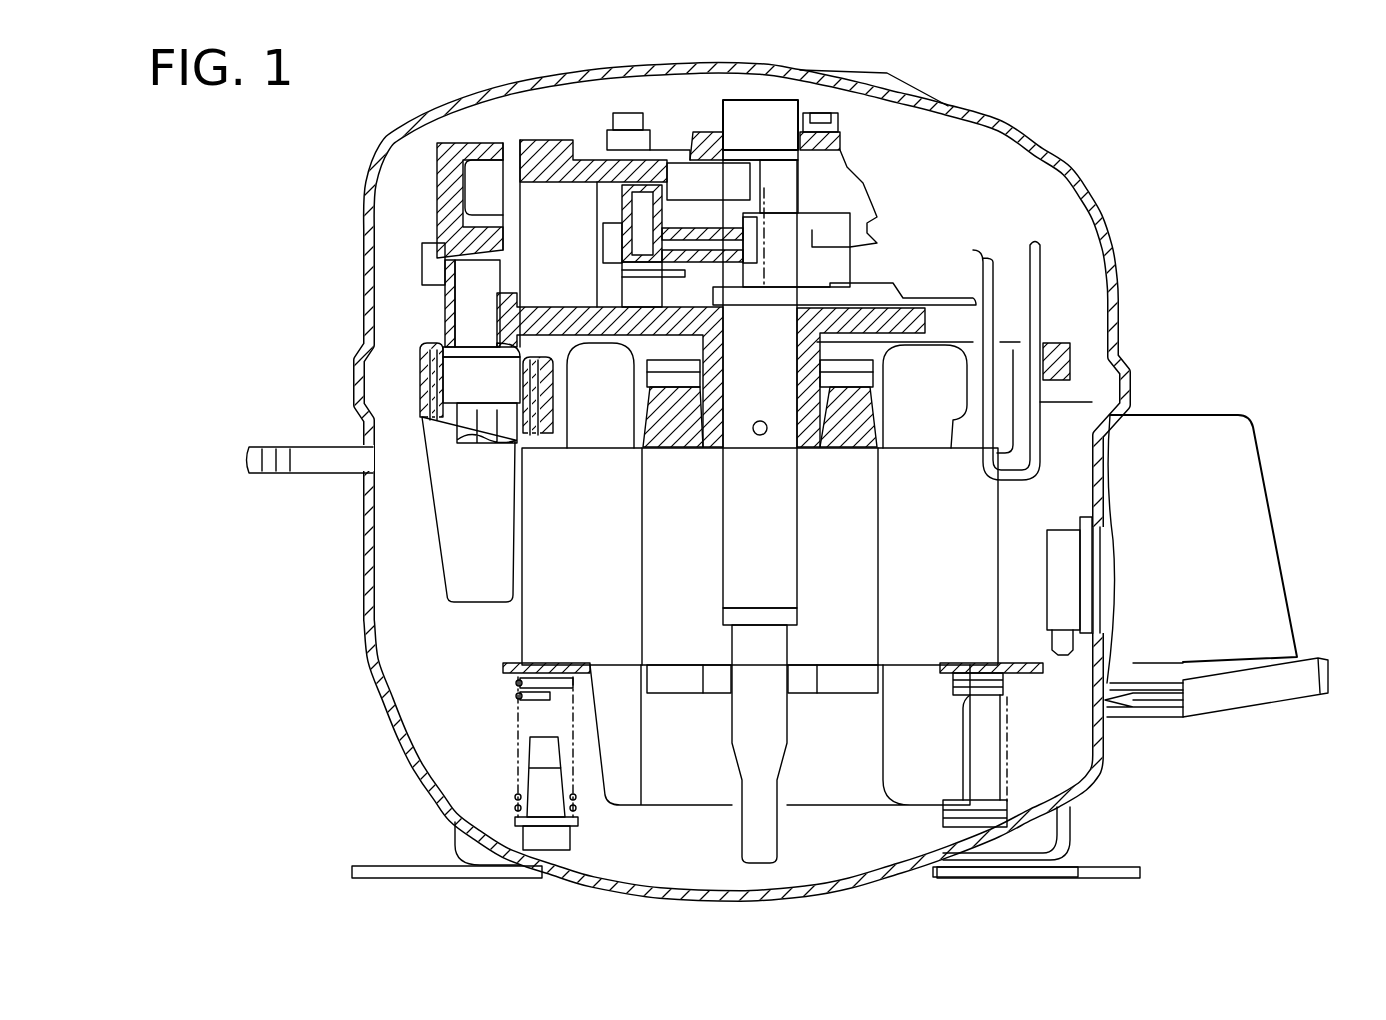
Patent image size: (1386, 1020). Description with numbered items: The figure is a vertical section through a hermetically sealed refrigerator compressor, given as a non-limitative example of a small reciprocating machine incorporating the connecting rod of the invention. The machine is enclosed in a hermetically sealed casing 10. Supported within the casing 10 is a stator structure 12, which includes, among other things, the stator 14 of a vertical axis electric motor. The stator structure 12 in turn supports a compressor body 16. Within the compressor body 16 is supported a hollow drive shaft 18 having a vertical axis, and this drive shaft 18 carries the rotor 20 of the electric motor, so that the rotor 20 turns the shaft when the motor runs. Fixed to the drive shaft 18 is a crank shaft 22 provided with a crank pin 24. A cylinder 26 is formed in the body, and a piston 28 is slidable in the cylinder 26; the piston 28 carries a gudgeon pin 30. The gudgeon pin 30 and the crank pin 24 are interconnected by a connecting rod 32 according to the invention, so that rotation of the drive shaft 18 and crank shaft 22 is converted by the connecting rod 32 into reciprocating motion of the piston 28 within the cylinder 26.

The hermetically sealed casing 10 is at (1097, 194).
The stator structure 12 is at (520, 616).
The stator 14 is at (543, 632).
The compressor body 16 is at (563, 148).
The hollow drive shaft 18 is at (730, 570).
The rotor 20 is at (655, 492).
The crank shaft 22 is at (791, 111).
The crank pin 24 is at (797, 240).
The cylinder 26 is at (527, 183).
The piston 28 is at (600, 210).
The gudgeon pin 30 is at (610, 255).
The connecting rod 32 is at (736, 255).